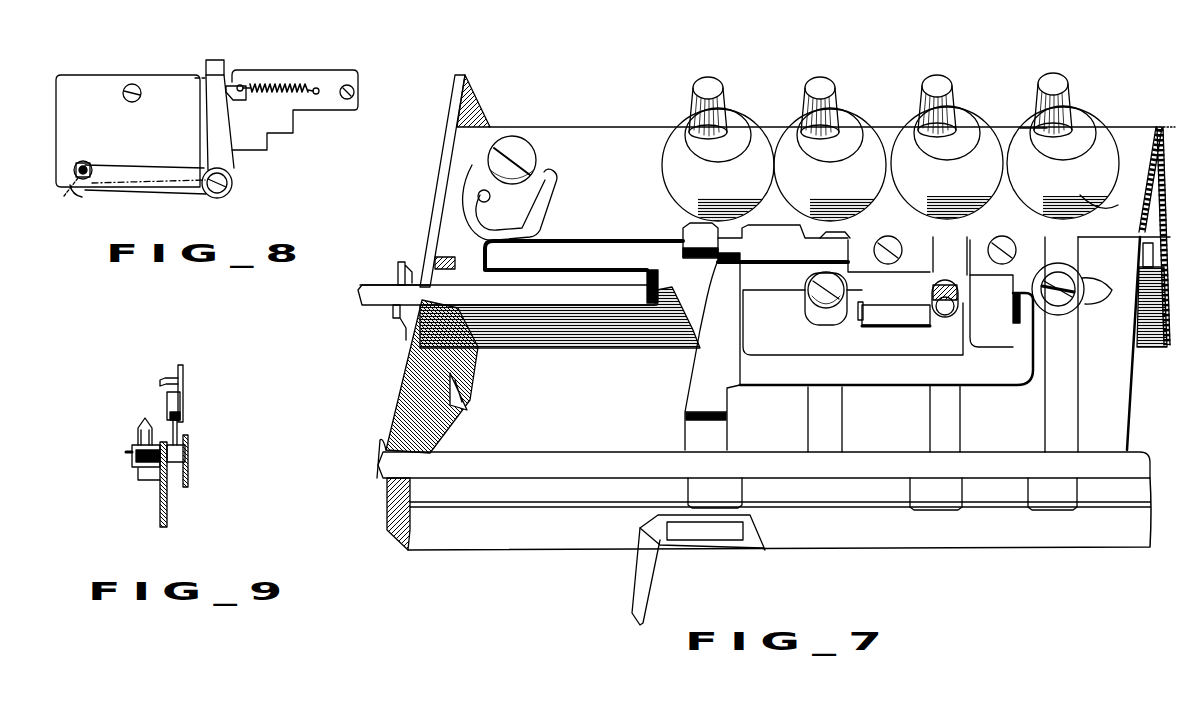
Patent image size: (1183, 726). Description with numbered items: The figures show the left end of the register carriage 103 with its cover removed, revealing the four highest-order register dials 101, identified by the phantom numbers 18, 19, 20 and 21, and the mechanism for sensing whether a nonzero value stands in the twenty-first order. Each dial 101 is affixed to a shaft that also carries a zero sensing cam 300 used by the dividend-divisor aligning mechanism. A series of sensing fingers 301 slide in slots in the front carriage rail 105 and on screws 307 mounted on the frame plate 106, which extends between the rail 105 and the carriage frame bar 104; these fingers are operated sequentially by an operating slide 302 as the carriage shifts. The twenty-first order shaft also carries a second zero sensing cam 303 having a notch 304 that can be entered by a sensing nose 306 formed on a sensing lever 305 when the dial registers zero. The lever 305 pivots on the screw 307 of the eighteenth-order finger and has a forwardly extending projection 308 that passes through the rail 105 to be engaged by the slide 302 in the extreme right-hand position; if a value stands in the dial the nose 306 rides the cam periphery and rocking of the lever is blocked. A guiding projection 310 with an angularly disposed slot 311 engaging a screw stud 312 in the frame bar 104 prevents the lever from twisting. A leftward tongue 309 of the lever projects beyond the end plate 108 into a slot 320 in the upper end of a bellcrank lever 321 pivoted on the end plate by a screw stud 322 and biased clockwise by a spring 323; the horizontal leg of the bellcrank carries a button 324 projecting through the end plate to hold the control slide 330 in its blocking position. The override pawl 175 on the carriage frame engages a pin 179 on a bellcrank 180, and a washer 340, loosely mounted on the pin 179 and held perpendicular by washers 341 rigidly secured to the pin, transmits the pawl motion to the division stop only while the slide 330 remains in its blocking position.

In FIG. 7, the eighteenth order dial 18 is at (1069, 122).
In FIG. 7, the nineteenth order dial 19 is at (953, 122).
In FIG. 7, the twentieth order dial 20 is at (836, 124).
In FIG. 7, the twenty-first order dial 21 is at (724, 124).
In FIG. 7, the register dial 101 is at (1085, 114).
In FIG. 8, the carriage frame 103 is at (143, 72).
In FIG. 7, the carriage frame 103 is at (1000, 122).
In FIG. 7, the carriage frame bar 104 is at (1130, 135).
In FIG. 7, the front carriage rail 105 is at (1045, 532).
In FIG. 7, the frame plate 106 is at (1118, 400).
In FIG. 8, the end plate 108 is at (170, 85).
In FIG. 7, the end plate 108 is at (416, 365).
In FIG. 9, the override pawl 175 is at (177, 378).
In FIG. 9, the pin 179 is at (176, 462).
In FIG. 9, the bellcrank 180 is at (190, 458).
In FIG. 7, the zero sensing cam 300 is at (1107, 203).
In FIG. 7, the sensing finger 301 is at (1055, 423).
In FIG. 7, the operating slide 302 is at (645, 590).
In FIG. 7, the second zero sensing cam 303 is at (693, 215).
In FIG. 7, the notch 304 is at (748, 216).
In FIG. 7, the sensing lever 305 is at (573, 283).
In FIG. 7, the sensing nose 306 is at (687, 234).
In FIG. 7, the screw 307 is at (1056, 306).
In FIG. 7, the forwardly extending projection 308 is at (733, 472).
In FIG. 8, the tongue 309 is at (218, 63).
In FIG. 7, the tongue 309 is at (360, 290).
In FIG. 7, the guiding projection 310 is at (540, 207).
In FIG. 7, the angularly disposed slot 311 is at (480, 190).
In FIG. 7, the screw stud 312 is at (516, 138).
In FIG. 8, the slot 320 is at (234, 100).
In FIG. 7, the slot 320 is at (392, 283).
In FIG. 8, the bellcrank lever 321 is at (231, 152).
In FIG. 7, the bellcrank lever 321 is at (410, 270).
In FIG. 8, the screw stud 322 is at (225, 186).
In FIG. 8, the spring 323 is at (283, 84).
In FIG. 8, the button 324 is at (86, 160).
In FIG. 9, the control slide 330 is at (160, 509).
In FIG. 9, the washer 340 is at (130, 455).
In FIG. 9, the washers 341 is at (145, 418).